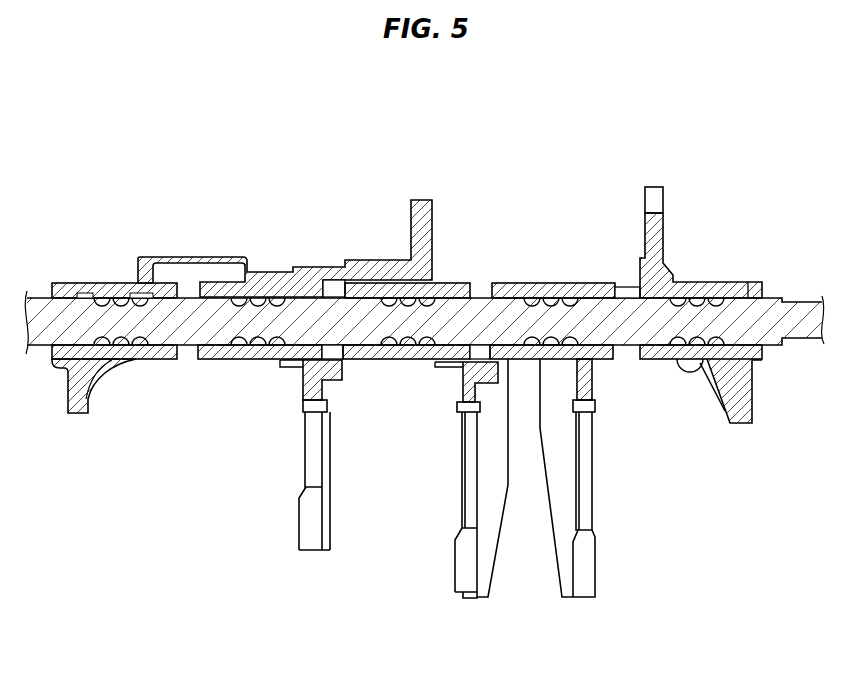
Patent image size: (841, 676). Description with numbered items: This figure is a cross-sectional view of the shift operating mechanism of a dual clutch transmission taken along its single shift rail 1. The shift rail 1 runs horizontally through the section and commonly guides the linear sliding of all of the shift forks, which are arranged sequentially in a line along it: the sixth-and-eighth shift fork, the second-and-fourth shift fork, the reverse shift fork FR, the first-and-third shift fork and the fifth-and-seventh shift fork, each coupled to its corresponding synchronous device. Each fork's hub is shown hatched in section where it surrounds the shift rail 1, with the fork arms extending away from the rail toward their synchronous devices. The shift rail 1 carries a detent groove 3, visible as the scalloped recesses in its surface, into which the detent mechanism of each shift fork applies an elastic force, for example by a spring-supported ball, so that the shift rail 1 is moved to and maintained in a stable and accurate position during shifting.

The shift rail 1 is at (167, 328).
The detent groove 3 is at (97, 297).
The reverse shift fork FR is at (468, 585).